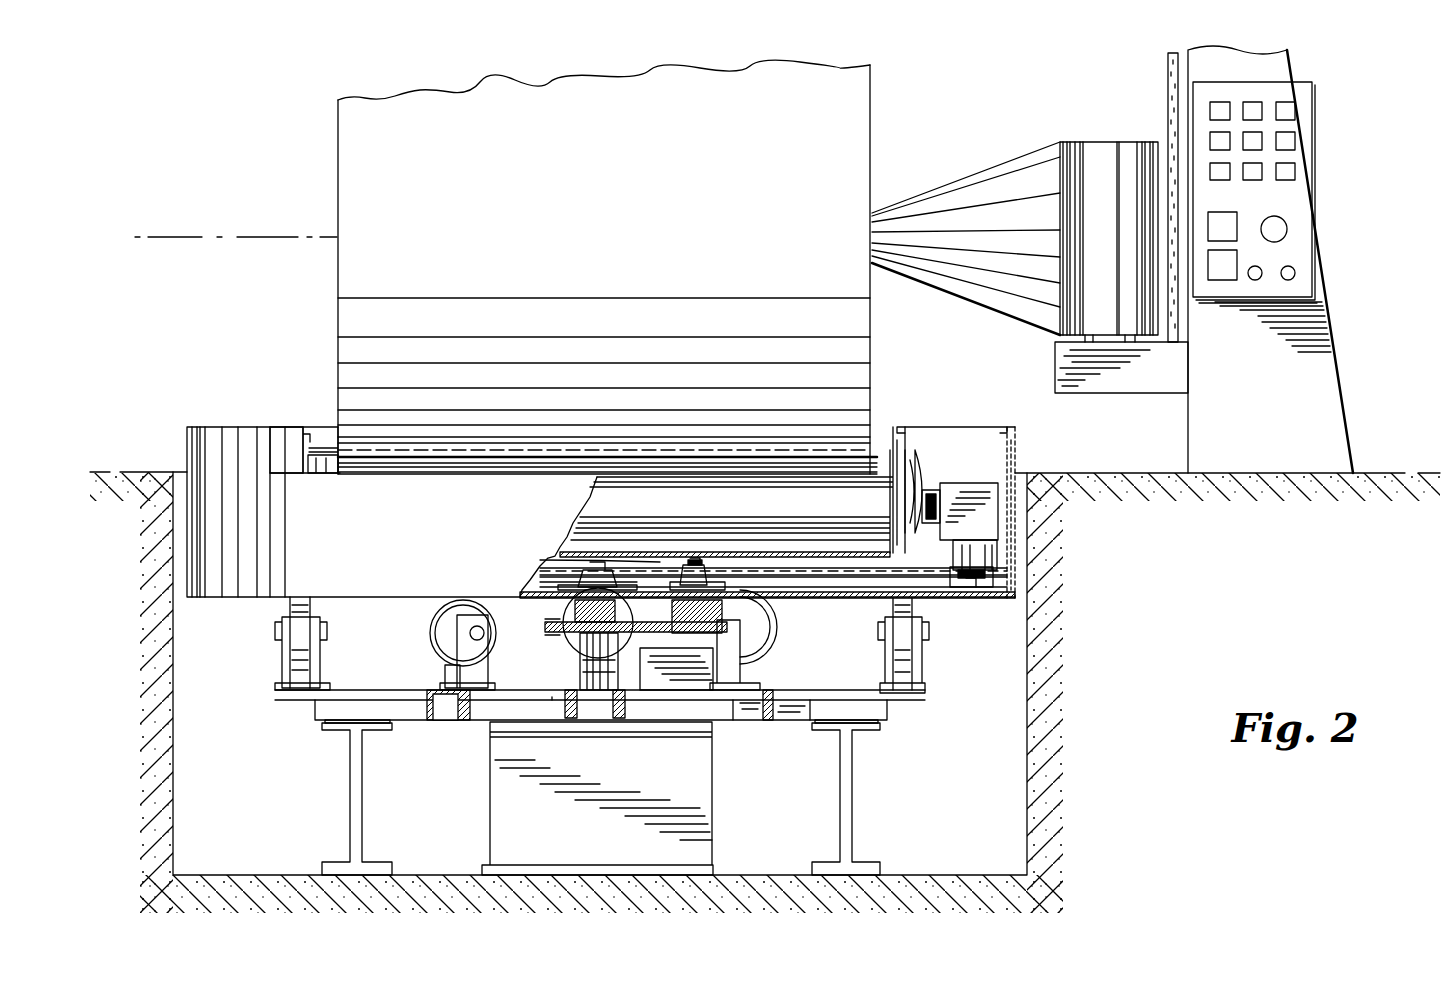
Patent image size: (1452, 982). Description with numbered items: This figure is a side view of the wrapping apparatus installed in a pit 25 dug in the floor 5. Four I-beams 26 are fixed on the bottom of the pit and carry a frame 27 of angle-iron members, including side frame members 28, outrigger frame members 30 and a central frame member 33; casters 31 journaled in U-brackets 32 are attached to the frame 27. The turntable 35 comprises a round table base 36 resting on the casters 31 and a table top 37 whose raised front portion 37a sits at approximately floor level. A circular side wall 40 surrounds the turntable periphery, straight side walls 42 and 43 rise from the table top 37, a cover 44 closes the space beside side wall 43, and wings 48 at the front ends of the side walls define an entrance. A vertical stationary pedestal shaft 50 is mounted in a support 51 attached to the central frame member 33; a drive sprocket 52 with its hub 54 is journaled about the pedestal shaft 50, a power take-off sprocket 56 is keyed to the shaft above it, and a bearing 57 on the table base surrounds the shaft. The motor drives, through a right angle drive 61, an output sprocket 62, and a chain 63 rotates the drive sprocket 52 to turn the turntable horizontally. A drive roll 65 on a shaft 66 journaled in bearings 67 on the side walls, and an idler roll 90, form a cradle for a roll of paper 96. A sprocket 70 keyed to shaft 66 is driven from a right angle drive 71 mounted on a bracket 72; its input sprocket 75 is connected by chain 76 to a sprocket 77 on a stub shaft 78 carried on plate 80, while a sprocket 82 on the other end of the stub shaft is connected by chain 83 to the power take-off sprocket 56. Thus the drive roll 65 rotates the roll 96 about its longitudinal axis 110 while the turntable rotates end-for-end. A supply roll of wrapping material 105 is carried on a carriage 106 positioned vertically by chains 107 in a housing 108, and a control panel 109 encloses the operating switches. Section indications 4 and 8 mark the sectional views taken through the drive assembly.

The floor 5 is at (1153, 470).
The pit 25 is at (1027, 678).
The I-beams 26 is at (360, 803).
The frame 27 is at (770, 720).
The side frame members 28 is at (462, 722).
The outrigger frame members 30 is at (432, 722).
The casters 31 is at (310, 606).
The U-brackets 32 is at (320, 670).
The central frame member 33 is at (625, 711).
The turntable 35 is at (200, 426).
The table base 36 is at (600, 677).
The table top 37 is at (570, 532).
The front portion 37a is at (322, 470).
The circular side wall 40 is at (392, 553).
The side wall 42 is at (881, 427).
The side wall 43 is at (310, 428).
The cover 44 is at (245, 426).
The wings 48 is at (278, 462).
The pedestal shaft 50 is at (540, 557).
The support 51 is at (552, 697).
The drive sprocket 52 is at (580, 650).
The hub 54 is at (580, 668).
The power take-off sprocket 56 is at (512, 600).
The bearing 57 is at (540, 578).
The right angle drive 61 is at (695, 692).
The output sprocket 62 is at (742, 655).
The chain 63 is at (650, 655).
The drive roll 65 is at (850, 512).
The shaft 66 is at (920, 490).
The bearings 67 is at (905, 523).
The sprocket 70 is at (938, 494).
The right angle drive 71 is at (1000, 480).
The bracket 72 is at (1000, 557).
The input sprocket 75 is at (948, 582).
The chain 76 is at (843, 576).
The sprocket 77 is at (707, 566).
The stub shaft 78 is at (775, 580).
The plate 80 is at (740, 588).
The sprocket 82 is at (655, 605).
The chain 83 is at (630, 600).
The idler roll 90 is at (334, 450).
The roll of paper 96 is at (597, 193).
The supply roll of wrapping material 105 is at (988, 168).
The carriage 106 is at (1115, 395).
The chains 107 is at (1168, 113).
The housing 108 is at (1328, 292).
The control panel 109 is at (1313, 150).
The longitudinal axis 110 is at (255, 235).
The section line 4 is at (603, 563).
The section line 8 is at (510, 603).